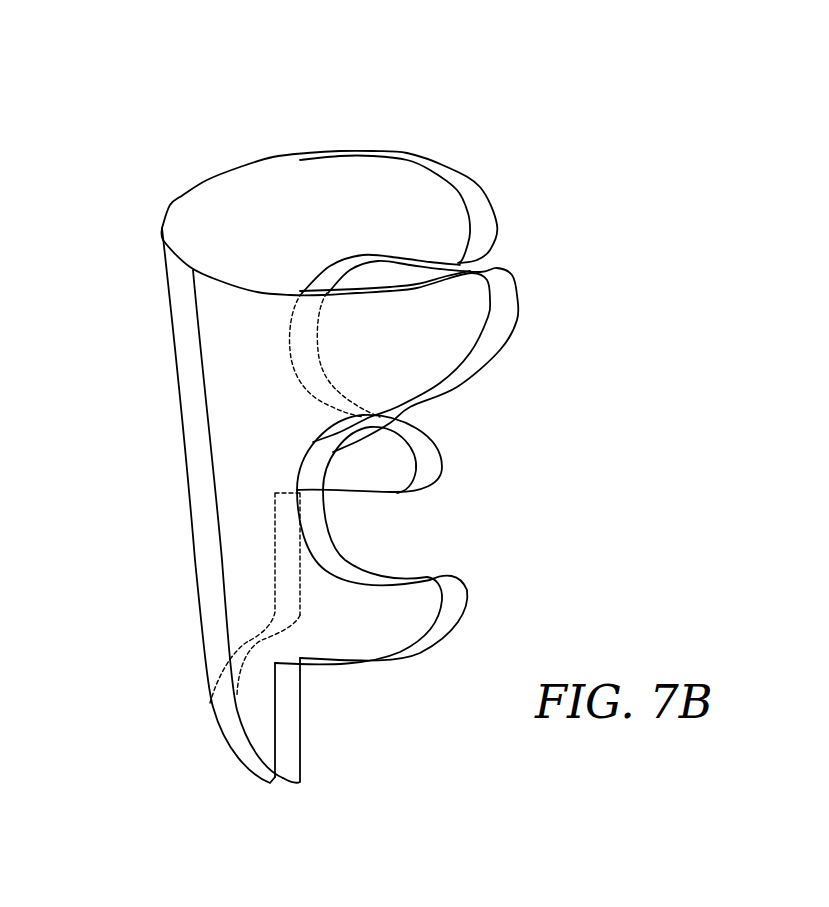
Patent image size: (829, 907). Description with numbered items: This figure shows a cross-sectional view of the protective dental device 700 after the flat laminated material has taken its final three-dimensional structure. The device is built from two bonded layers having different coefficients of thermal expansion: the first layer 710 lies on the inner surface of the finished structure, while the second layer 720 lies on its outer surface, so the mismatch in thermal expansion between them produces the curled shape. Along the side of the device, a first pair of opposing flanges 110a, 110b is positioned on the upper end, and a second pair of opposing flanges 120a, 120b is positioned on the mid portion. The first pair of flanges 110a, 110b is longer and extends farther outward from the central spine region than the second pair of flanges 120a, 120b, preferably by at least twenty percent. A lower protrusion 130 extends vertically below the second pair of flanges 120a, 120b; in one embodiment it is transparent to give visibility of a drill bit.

The protective dental device 700 is at (359, 90).
The first layer 710 is at (290, 218).
The second layer 720 is at (218, 337).
The first opposing flange 110a is at (428, 212).
The first opposing flange 110b is at (467, 308).
The second opposing flange 120a is at (388, 470).
The second opposing flange 120b is at (422, 603).
The lower protrusion 130 is at (268, 740).